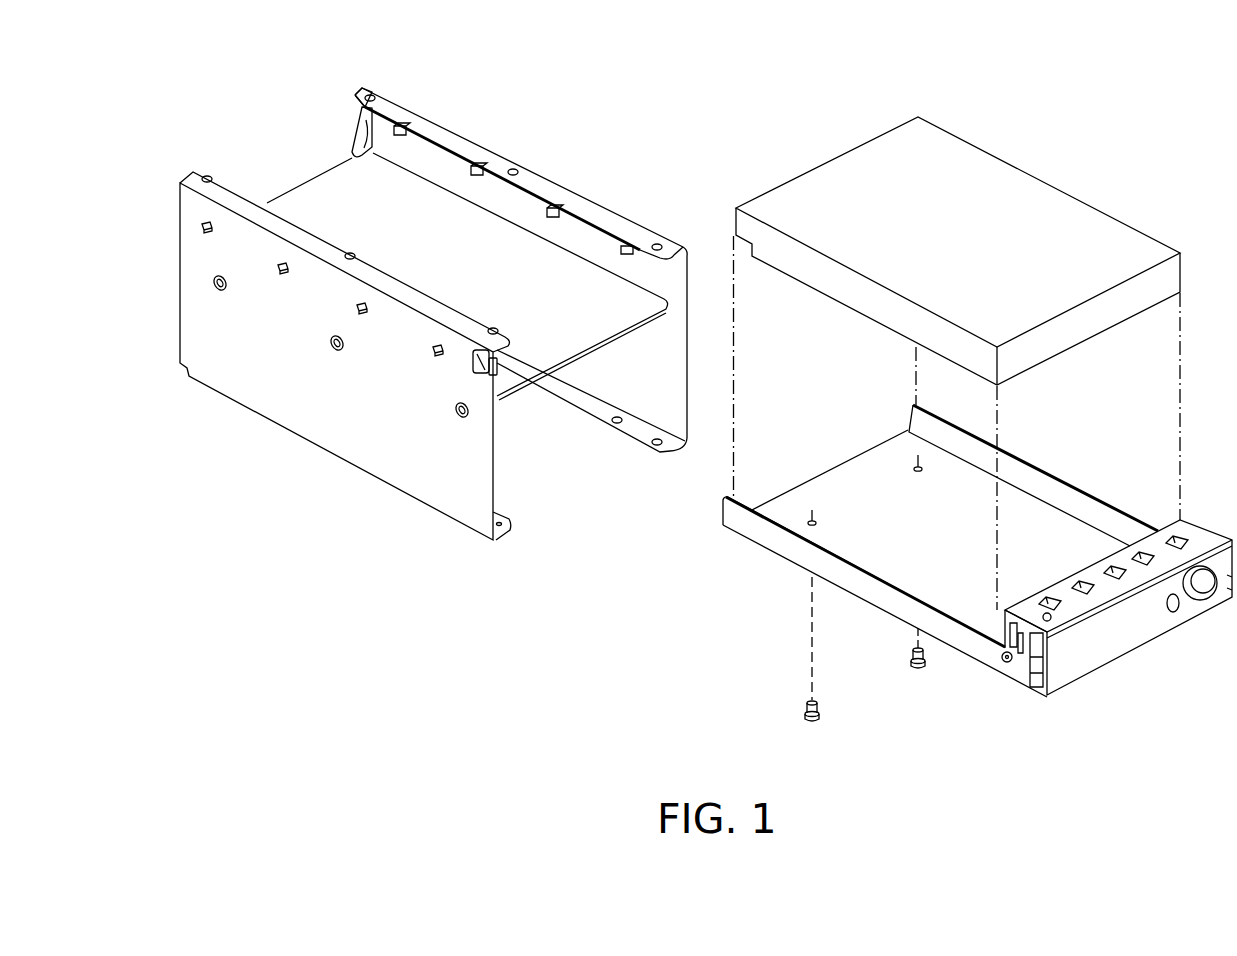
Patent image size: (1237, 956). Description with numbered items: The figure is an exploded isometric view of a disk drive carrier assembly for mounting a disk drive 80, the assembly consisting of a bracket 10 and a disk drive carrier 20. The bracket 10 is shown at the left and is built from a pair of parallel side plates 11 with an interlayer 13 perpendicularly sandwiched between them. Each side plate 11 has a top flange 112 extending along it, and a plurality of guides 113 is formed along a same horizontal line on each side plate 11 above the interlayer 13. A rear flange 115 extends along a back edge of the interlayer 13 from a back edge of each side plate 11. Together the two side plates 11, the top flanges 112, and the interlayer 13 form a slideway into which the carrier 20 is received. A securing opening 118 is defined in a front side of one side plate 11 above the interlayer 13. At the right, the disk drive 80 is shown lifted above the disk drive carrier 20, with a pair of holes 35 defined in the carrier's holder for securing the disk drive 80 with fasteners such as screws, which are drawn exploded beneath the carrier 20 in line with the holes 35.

The bracket 10 is at (583, 175).
The side plate 11 is at (355, 437).
The top flange 112 is at (232, 197).
The guide 113 is at (356, 100).
The rear flange 115 is at (360, 138).
The interlayer 13 is at (328, 197).
The securing opening 118 is at (473, 372).
The disk drive 80 is at (1047, 165).
The disk drive carrier 20 is at (1072, 463).
The hole 35 is at (917, 462).